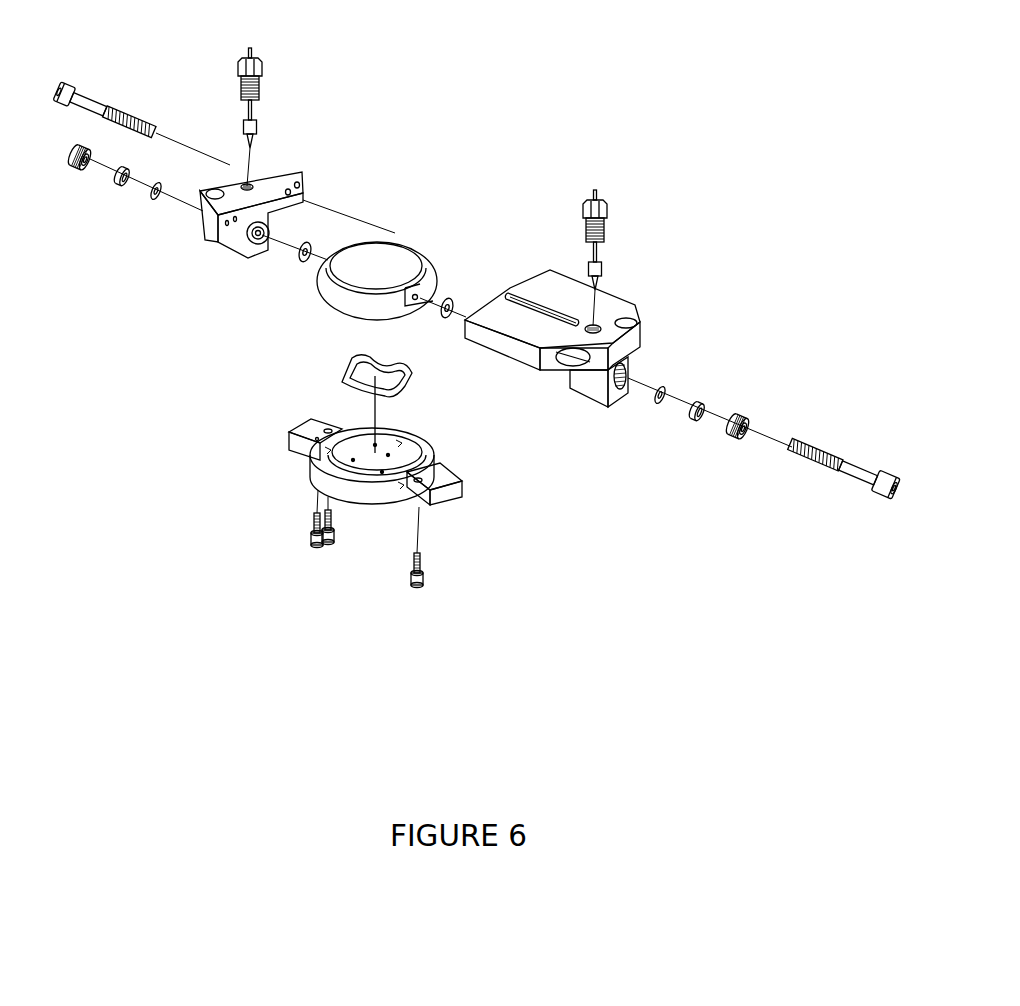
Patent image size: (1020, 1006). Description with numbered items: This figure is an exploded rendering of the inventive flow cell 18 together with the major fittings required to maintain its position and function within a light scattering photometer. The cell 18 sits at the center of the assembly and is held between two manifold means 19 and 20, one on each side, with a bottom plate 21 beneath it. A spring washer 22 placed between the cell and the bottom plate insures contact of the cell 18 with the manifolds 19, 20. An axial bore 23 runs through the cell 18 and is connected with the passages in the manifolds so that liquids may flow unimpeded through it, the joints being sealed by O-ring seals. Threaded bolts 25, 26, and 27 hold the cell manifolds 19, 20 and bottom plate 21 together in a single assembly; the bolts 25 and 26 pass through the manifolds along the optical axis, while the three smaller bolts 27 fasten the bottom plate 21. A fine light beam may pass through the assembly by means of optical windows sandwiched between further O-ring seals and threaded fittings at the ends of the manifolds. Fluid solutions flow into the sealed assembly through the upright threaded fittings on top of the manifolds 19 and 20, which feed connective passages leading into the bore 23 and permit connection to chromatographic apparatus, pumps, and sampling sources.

The cell 18 is at (334, 311).
The manifold means 19 is at (296, 170).
The manifold means 20 is at (622, 298).
The bottom plate 21 is at (293, 450).
The spring washer 22 is at (341, 372).
The axial bore 23 is at (418, 301).
The threaded bolt 25 is at (70, 92).
The threaded bolt 26 is at (851, 463).
The threaded bolts 27 is at (408, 579).